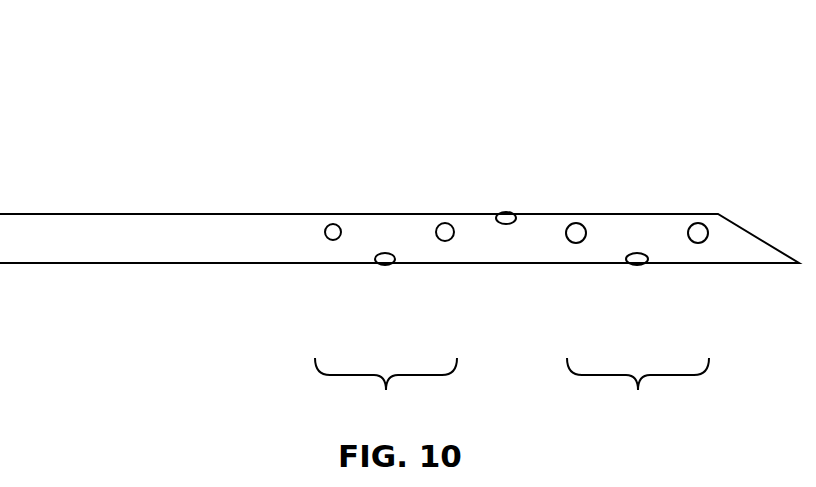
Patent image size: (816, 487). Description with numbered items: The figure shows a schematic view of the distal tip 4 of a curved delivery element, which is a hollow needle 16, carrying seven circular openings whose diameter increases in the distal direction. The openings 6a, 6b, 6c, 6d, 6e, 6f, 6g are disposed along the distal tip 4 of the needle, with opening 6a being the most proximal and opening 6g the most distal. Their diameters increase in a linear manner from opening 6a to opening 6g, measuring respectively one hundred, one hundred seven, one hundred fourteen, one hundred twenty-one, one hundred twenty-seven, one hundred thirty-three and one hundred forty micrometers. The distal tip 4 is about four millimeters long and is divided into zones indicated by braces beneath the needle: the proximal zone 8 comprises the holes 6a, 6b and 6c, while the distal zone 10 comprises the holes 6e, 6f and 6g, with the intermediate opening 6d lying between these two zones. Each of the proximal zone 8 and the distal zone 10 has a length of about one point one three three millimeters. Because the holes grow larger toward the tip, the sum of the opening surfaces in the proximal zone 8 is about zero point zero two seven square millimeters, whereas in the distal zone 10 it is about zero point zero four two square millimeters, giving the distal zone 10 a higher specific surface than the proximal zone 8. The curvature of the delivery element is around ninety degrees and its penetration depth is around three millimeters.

The distal tip 4 is at (254, 118).
The hollow needle 16 is at (110, 211).
The opening 6a is at (328, 240).
The opening 6b is at (383, 268).
The opening 6c is at (436, 225).
The opening 6d is at (508, 211).
The opening 6e is at (566, 239).
The opening 6f is at (627, 267).
The opening 6g is at (692, 222).
The proximal zone 8 is at (386, 390).
The distal zone 10 is at (638, 391).